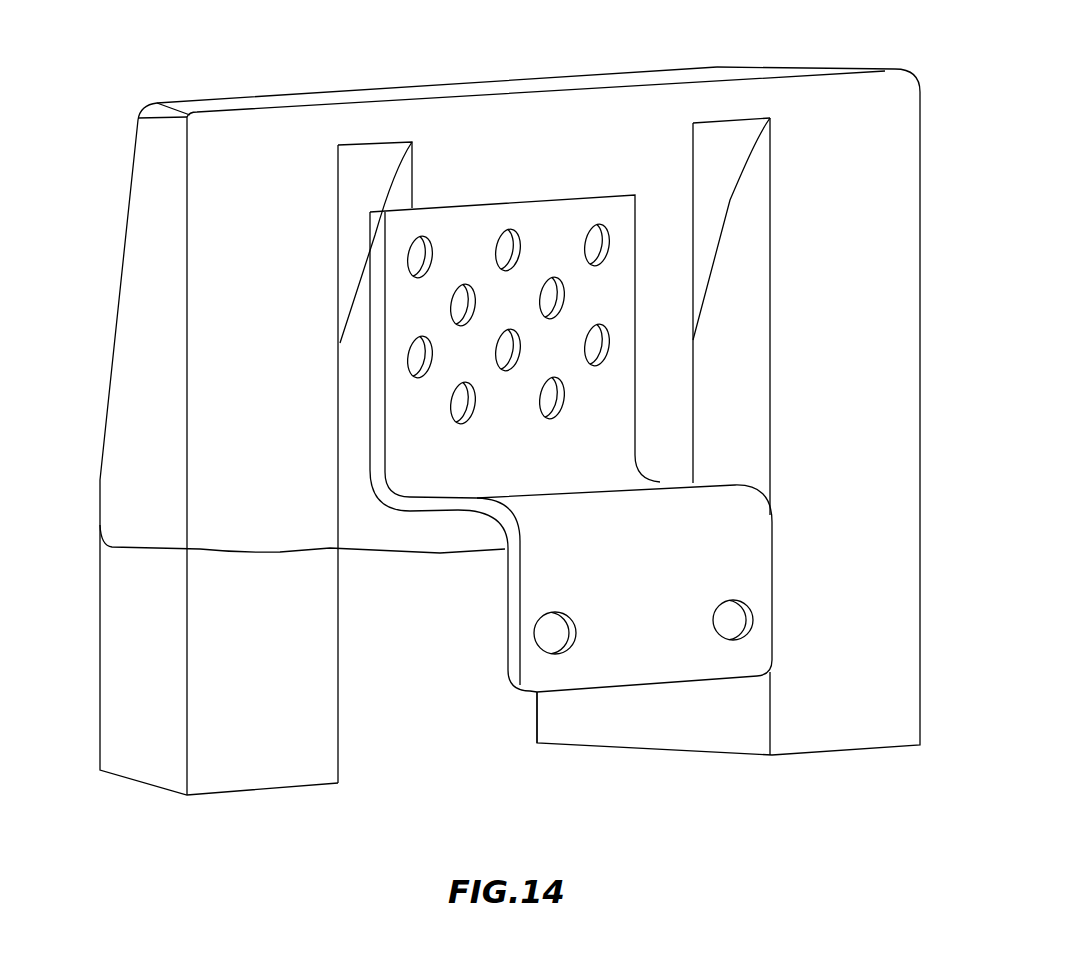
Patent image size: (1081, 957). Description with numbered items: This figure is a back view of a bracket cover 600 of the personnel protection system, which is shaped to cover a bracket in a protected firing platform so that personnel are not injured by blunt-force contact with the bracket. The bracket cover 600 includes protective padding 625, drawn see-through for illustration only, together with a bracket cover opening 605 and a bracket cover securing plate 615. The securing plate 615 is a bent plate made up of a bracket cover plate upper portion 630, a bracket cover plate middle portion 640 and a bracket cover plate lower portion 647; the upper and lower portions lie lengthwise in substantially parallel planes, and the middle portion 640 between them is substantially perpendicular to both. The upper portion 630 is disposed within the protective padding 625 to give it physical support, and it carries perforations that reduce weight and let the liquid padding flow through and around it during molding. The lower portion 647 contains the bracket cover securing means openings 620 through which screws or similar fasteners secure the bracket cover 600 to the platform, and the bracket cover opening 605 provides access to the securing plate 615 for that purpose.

The bracket cover 600 is at (873, 635).
The bracket cover opening 605 is at (428, 735).
The bracket cover securing plate 615 is at (655, 653).
The bracket cover securing means openings 620 is at (740, 623).
The protective padding 625 is at (277, 140).
The bracket cover plate upper portion 630 is at (552, 218).
The bracket cover plate middle portion 640 is at (652, 492).
The bracket cover plate lower portion 647 is at (602, 668).